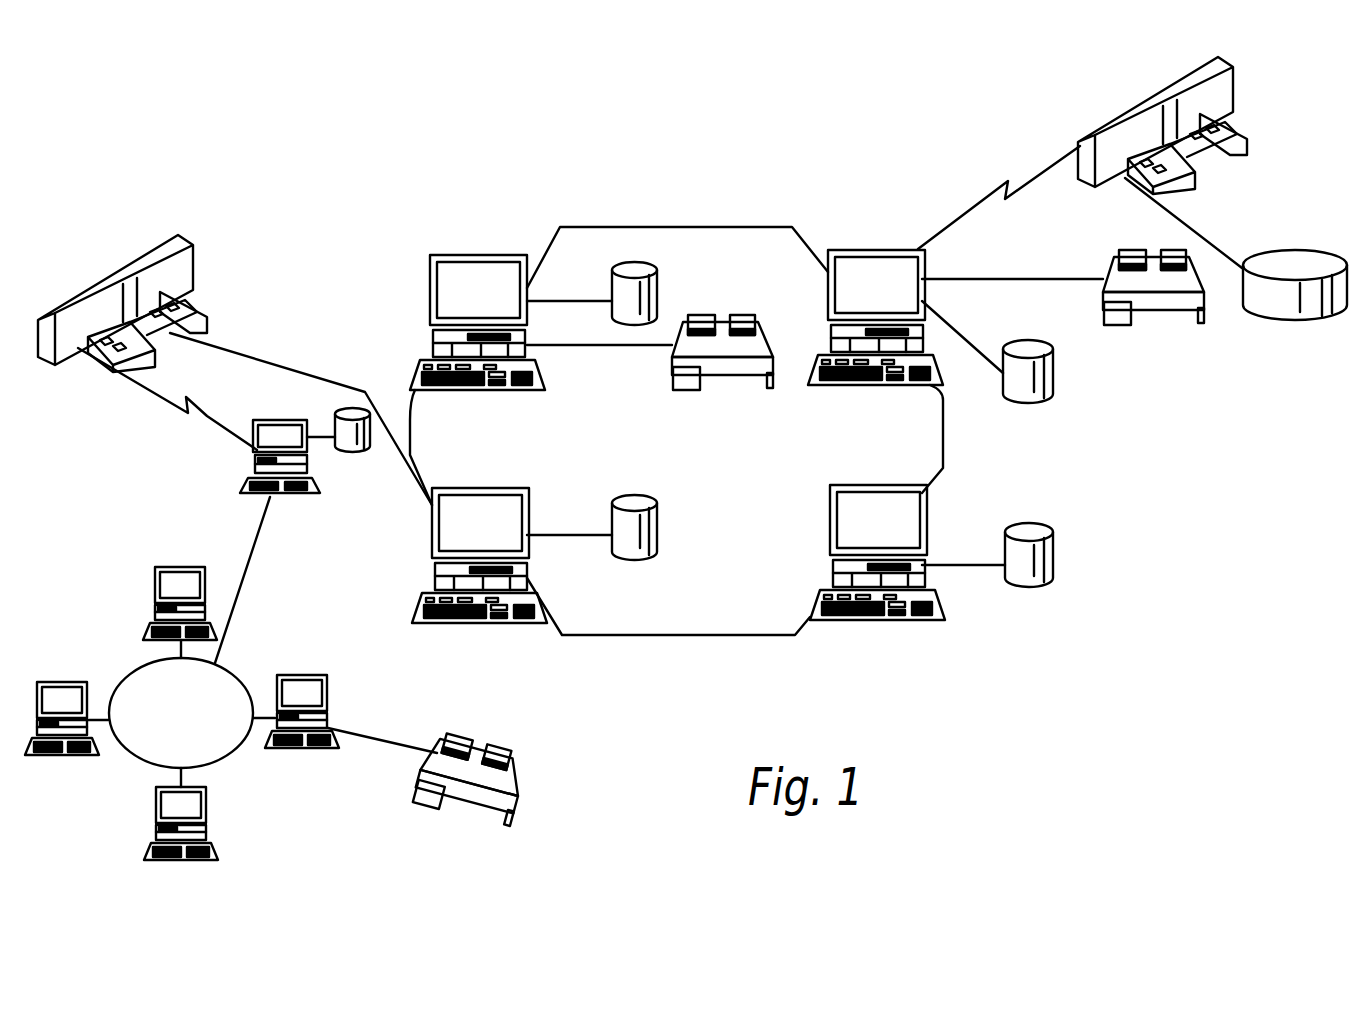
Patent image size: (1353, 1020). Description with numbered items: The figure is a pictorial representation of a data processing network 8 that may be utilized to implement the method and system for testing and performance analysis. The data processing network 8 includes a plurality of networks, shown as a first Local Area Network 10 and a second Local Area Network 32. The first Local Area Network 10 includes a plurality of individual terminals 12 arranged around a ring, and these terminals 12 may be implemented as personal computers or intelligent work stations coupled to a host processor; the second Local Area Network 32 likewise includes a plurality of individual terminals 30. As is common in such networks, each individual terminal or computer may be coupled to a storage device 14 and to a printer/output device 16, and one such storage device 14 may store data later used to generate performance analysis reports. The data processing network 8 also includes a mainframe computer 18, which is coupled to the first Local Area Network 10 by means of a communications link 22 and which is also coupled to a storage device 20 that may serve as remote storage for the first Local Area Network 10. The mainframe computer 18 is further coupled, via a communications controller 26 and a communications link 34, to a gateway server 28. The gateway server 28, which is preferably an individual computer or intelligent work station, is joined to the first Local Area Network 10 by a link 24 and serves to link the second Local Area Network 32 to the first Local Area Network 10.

The data processing network 8 is at (708, 191).
The local area network 10 is at (705, 637).
The individual terminal 12 is at (495, 254).
The storage device 14 is at (657, 273).
The printer/output device 16 is at (721, 323).
The mainframe computer 18 is at (1150, 88).
The storage device 20 is at (1322, 246).
The communications link 22 is at (1039, 176).
The communication link 24 is at (288, 368).
The communications controller 26 is at (186, 242).
The gateway server 28 is at (280, 420).
The workstation computer 30 is at (188, 566).
The local area network 32 is at (131, 763).
The communications link 34 is at (196, 421).